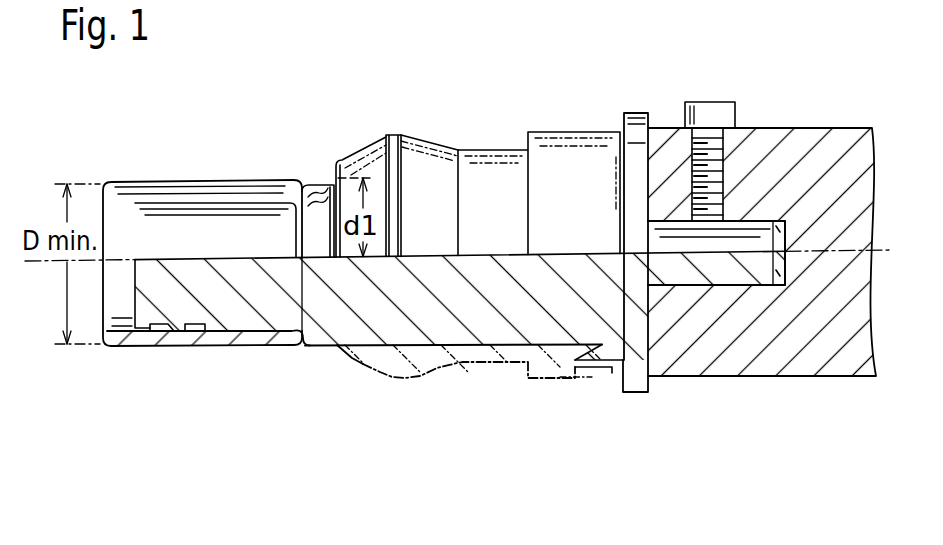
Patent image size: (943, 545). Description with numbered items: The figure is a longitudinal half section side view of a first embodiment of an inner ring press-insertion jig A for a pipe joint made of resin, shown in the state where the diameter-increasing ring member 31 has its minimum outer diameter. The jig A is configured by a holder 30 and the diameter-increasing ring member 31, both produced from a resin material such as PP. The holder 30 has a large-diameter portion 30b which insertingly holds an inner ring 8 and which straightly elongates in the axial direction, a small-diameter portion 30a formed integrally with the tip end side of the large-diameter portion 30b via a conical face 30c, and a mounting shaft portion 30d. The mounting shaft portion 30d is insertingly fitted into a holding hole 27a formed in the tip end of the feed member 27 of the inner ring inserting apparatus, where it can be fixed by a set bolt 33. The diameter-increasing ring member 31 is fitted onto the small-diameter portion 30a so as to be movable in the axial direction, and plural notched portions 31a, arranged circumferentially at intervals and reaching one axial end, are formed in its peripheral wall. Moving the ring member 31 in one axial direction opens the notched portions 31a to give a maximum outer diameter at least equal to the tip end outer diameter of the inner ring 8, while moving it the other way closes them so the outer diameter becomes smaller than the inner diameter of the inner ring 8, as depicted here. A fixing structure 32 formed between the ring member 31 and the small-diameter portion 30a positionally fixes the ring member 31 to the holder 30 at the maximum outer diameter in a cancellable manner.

The inner ring 8 is at (445, 166).
The feed member 27 is at (845, 138).
The holding hole 27a is at (722, 273).
The holder 30 is at (548, 452).
The small-diameter portion 30a is at (243, 314).
The large-diameter portion 30b is at (450, 324).
The conical face 30c is at (305, 346).
The mounting shaft portion 30d is at (760, 267).
The diameter-increasing ring member 31 is at (126, 348).
The notched portions 31a is at (222, 205).
The fixing structure 32 is at (173, 346).
The set bolt 33 is at (700, 108).
The inner ring press-insertion jig A is at (393, 119).